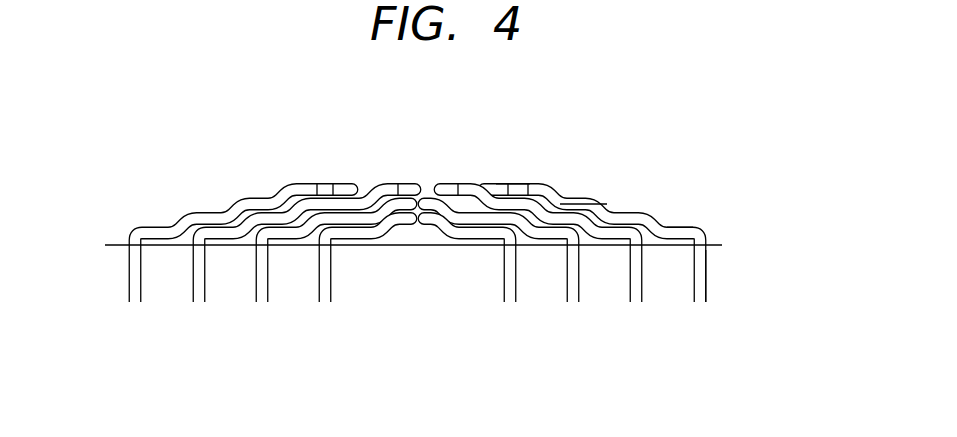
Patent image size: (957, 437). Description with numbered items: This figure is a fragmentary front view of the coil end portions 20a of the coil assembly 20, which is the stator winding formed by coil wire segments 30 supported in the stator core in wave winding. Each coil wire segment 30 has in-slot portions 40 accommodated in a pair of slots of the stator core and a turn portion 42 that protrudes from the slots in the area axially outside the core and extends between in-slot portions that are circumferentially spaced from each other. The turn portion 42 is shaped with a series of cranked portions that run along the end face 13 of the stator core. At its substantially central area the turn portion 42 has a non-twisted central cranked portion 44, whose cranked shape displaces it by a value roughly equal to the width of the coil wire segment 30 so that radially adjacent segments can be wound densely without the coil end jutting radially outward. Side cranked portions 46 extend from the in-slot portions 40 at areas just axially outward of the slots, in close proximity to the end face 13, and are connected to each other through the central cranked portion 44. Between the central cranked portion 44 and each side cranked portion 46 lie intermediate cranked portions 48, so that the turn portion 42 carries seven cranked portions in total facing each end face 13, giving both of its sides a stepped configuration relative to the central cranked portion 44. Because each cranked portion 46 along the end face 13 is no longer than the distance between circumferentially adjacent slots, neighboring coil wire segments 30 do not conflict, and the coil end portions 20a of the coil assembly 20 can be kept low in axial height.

The end face 13 is at (115, 246).
The coil assembly 20 is at (423, 140).
The coil end portions 20a is at (294, 190).
The coil wire segment 30 is at (650, 145).
The in-slot portions 40 is at (708, 273).
The turn portion 42 is at (644, 212).
The central cranked portion 44 is at (513, 183).
The side cranked portions 46 is at (684, 222).
The intermediate cranked portions 48 is at (628, 212).